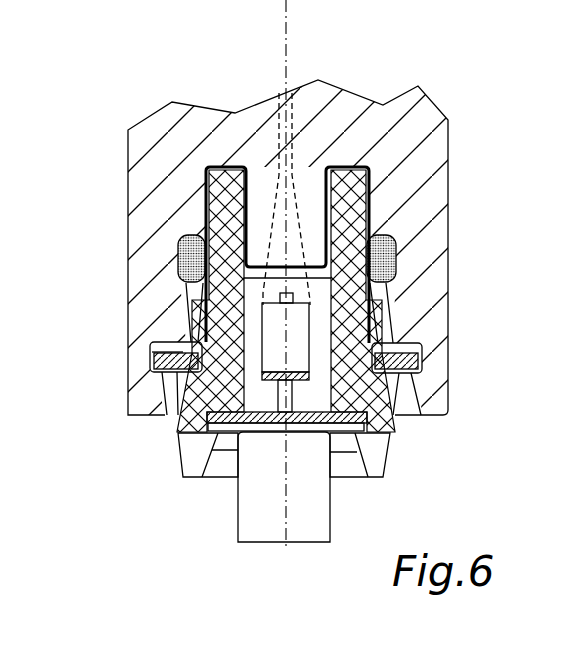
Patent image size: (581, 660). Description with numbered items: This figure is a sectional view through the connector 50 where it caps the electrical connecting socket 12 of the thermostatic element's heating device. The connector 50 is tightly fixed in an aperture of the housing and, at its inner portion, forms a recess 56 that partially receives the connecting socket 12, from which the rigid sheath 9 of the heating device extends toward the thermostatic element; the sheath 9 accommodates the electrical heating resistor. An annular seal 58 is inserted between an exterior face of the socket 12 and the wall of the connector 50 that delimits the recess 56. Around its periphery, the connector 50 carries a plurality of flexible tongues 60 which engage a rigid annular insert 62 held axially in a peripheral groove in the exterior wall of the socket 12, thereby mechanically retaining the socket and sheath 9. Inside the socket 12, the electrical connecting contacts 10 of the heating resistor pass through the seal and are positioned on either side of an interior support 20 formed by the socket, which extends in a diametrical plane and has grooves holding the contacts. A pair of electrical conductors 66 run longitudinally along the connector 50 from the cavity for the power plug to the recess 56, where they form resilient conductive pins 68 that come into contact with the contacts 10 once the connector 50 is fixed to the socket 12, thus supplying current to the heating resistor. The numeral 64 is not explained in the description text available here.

The connector 50 is at (176, 131).
The recess 56 is at (205, 176).
The annular seal 58 is at (177, 242).
The resilient conductive pins 68 is at (398, 270).
The electrical connecting contacts 10 is at (368, 217).
The interior support 20 is at (318, 327).
The rigid annular insert 62 is at (150, 358).
The flexible tongues 60 is at (433, 378).
The base plate 64 is at (177, 427).
The electrical connecting socket 12 is at (380, 404).
The rigid sheath 9 is at (317, 517).
The electrical conductors 66 is at (279, 125).